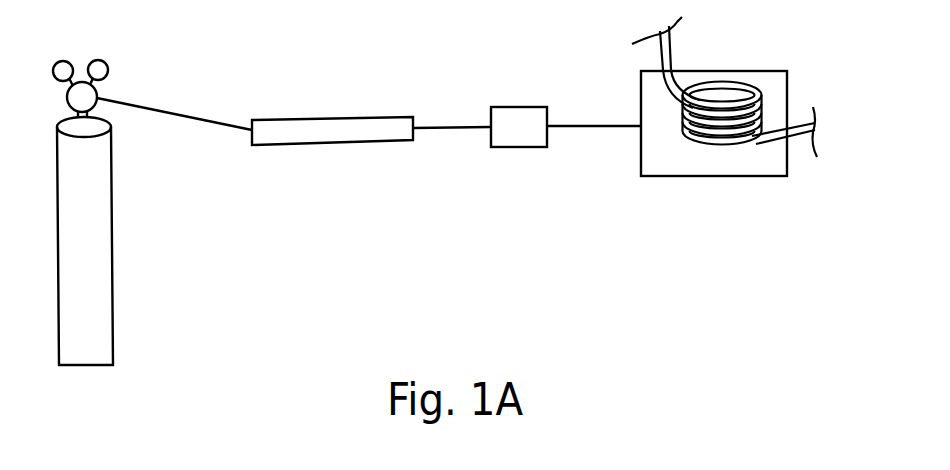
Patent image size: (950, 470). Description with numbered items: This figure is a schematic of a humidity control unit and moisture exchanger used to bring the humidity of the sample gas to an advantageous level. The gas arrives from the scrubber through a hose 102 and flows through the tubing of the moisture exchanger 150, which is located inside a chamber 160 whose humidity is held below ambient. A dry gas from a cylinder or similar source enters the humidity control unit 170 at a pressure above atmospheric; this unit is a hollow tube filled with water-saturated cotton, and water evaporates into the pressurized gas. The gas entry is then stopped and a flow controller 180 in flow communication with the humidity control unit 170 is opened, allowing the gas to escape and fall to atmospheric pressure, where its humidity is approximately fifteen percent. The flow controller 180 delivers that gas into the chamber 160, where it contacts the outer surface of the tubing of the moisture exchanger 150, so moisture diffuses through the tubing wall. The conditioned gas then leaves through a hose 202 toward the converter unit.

The hose 102 is at (676, 46).
The moisture exchanger 150 is at (730, 148).
The chamber 160 is at (677, 176).
The humidity control unit 170 is at (325, 117).
The flow controller 180 is at (521, 106).
The hose 202 is at (806, 121).